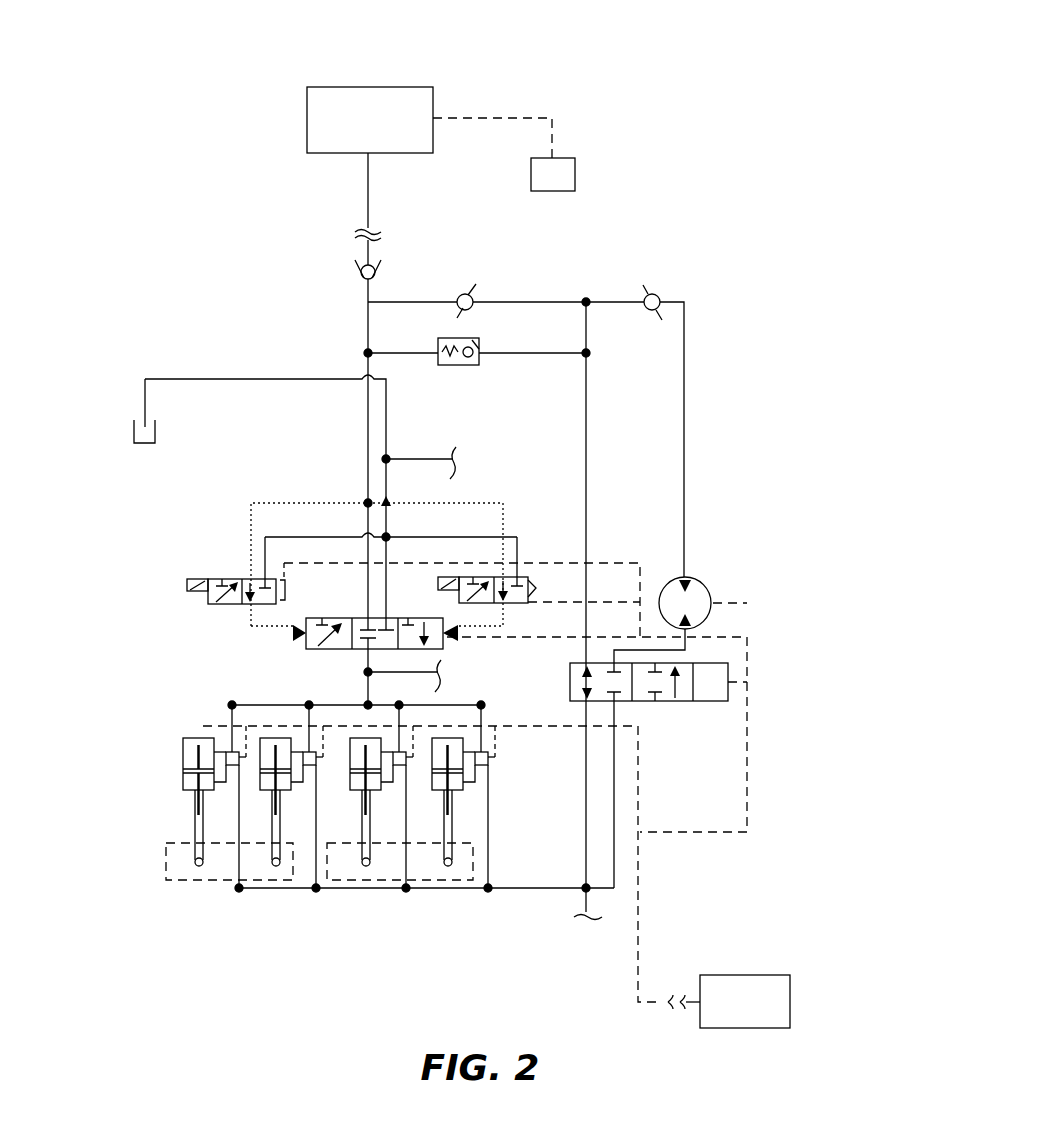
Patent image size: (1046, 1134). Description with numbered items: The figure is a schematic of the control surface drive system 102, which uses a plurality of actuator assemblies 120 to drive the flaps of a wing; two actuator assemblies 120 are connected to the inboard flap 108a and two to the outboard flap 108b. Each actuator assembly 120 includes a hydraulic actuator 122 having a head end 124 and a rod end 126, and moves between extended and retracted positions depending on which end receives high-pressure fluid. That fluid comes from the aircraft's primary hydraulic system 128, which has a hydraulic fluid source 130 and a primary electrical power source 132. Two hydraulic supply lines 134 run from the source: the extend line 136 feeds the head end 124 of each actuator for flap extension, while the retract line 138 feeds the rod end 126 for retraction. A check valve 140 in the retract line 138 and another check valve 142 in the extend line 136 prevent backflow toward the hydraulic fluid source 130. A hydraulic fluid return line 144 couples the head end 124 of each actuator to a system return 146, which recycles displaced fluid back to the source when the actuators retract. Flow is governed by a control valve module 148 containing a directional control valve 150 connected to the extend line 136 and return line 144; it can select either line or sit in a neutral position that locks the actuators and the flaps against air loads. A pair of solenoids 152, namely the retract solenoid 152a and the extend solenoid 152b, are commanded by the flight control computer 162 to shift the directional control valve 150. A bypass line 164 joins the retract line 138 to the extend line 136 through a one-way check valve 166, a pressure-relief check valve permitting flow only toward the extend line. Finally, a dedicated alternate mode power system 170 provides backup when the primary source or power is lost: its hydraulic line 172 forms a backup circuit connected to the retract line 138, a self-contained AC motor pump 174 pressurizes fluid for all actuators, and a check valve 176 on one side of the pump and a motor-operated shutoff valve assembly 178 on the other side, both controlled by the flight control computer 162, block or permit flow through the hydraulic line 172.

The control surface drive system 102 is at (682, 241).
The inboard flap 108a is at (440, 880).
The outboard flap 108b is at (164, 863).
The actuator assembly 120 is at (371, 851).
The hydraulic actuator 122 is at (183, 772).
The head end 124 is at (183, 751).
The rod end 126 is at (196, 793).
The primary hydraulic system 128 is at (516, 89).
The hydraulic fluid source 130 is at (307, 120).
The primary electrical power source 132 is at (563, 158).
The hydraulic supply lines 134 is at (359, 328).
The extend line 136 is at (366, 425).
The retract line 138 is at (587, 437).
The check valve 140 is at (473, 294).
The check valve 142 is at (360, 272).
The hydraulic fluid return line 144 is at (195, 378).
The system return 146 is at (134, 433).
The control valve module 148 is at (165, 559).
The directional control valve 150 is at (306, 646).
The solenoids 152 is at (211, 570).
The retract solenoid 152a is at (530, 582).
The extend solenoid 152b is at (208, 593).
The flight control computer 162 is at (790, 1003).
The bypass line 164 is at (545, 354).
The one-way check valve 166 is at (462, 338).
The alternate mode power system 170 is at (772, 648).
The hydraulic line 172 is at (614, 787).
The pump 174 is at (711, 600).
The check valve 176 is at (662, 294).
The valve assembly 178 is at (688, 702).